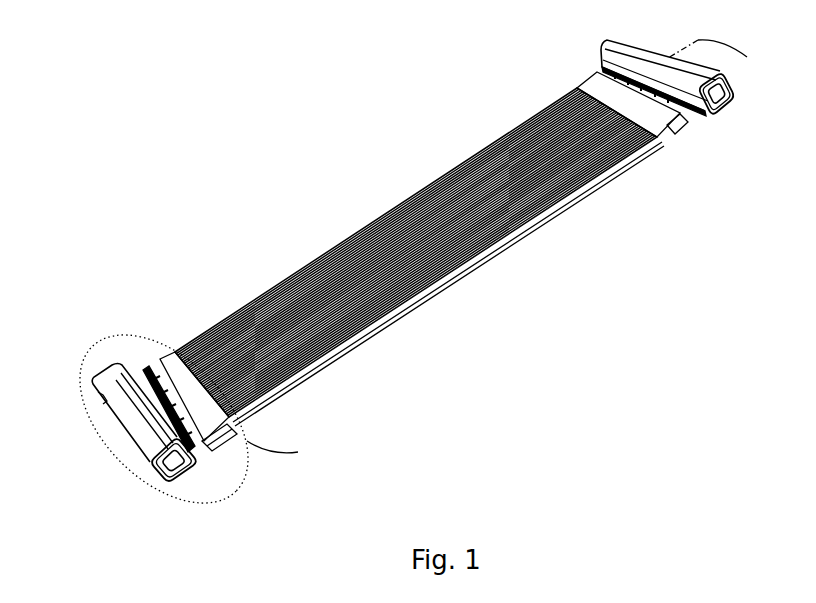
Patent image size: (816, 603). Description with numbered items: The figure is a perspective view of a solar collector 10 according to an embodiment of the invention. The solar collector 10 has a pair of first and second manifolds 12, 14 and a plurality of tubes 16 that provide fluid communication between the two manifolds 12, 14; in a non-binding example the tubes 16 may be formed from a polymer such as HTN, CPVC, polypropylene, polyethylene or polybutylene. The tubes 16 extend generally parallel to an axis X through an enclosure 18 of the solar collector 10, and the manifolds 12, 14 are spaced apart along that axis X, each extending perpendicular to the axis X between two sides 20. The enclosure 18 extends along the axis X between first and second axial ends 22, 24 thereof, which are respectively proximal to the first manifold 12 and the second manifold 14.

The solar collector 10 is at (243, 103).
The first manifold 12 is at (103, 367).
The second manifold 14 is at (607, 45).
The tubes 16 is at (198, 450).
The enclosure 18 is at (396, 191).
The sides 20 is at (728, 107).
The first axial end 22 is at (152, 355).
The second axial end 24 is at (583, 73).